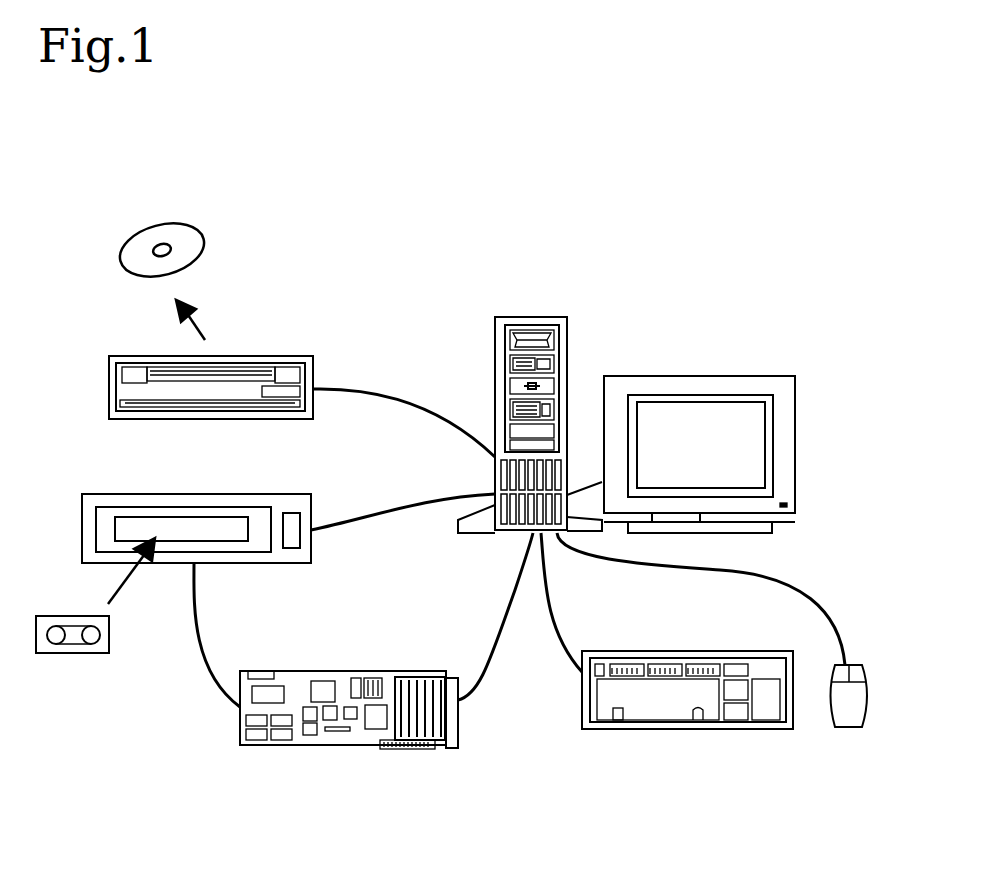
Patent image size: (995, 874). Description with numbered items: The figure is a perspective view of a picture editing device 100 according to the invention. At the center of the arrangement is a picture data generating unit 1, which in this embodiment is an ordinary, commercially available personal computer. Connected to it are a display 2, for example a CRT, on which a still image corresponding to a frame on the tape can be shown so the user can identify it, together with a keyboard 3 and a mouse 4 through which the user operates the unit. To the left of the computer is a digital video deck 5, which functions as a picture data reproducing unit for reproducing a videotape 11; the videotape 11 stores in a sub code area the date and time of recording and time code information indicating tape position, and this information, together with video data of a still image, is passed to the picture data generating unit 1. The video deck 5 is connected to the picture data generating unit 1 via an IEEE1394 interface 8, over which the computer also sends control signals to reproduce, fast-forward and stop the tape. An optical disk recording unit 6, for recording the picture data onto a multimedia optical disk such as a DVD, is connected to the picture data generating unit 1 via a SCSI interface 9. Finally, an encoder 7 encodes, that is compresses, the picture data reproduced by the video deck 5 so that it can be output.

The picture editing device 100 is at (556, 213).
The picture data generating unit 1 is at (560, 318).
The display 2 is at (757, 385).
The keyboard 3 is at (582, 727).
The mouse 4 is at (852, 666).
The digital video deck 5 is at (302, 497).
The optical disk recording unit 6 is at (313, 357).
The encoder 7 is at (384, 680).
The IEEE1394 interface 8 is at (388, 502).
The SCSI interface 9 is at (387, 393).
The videotape 11 is at (70, 653).